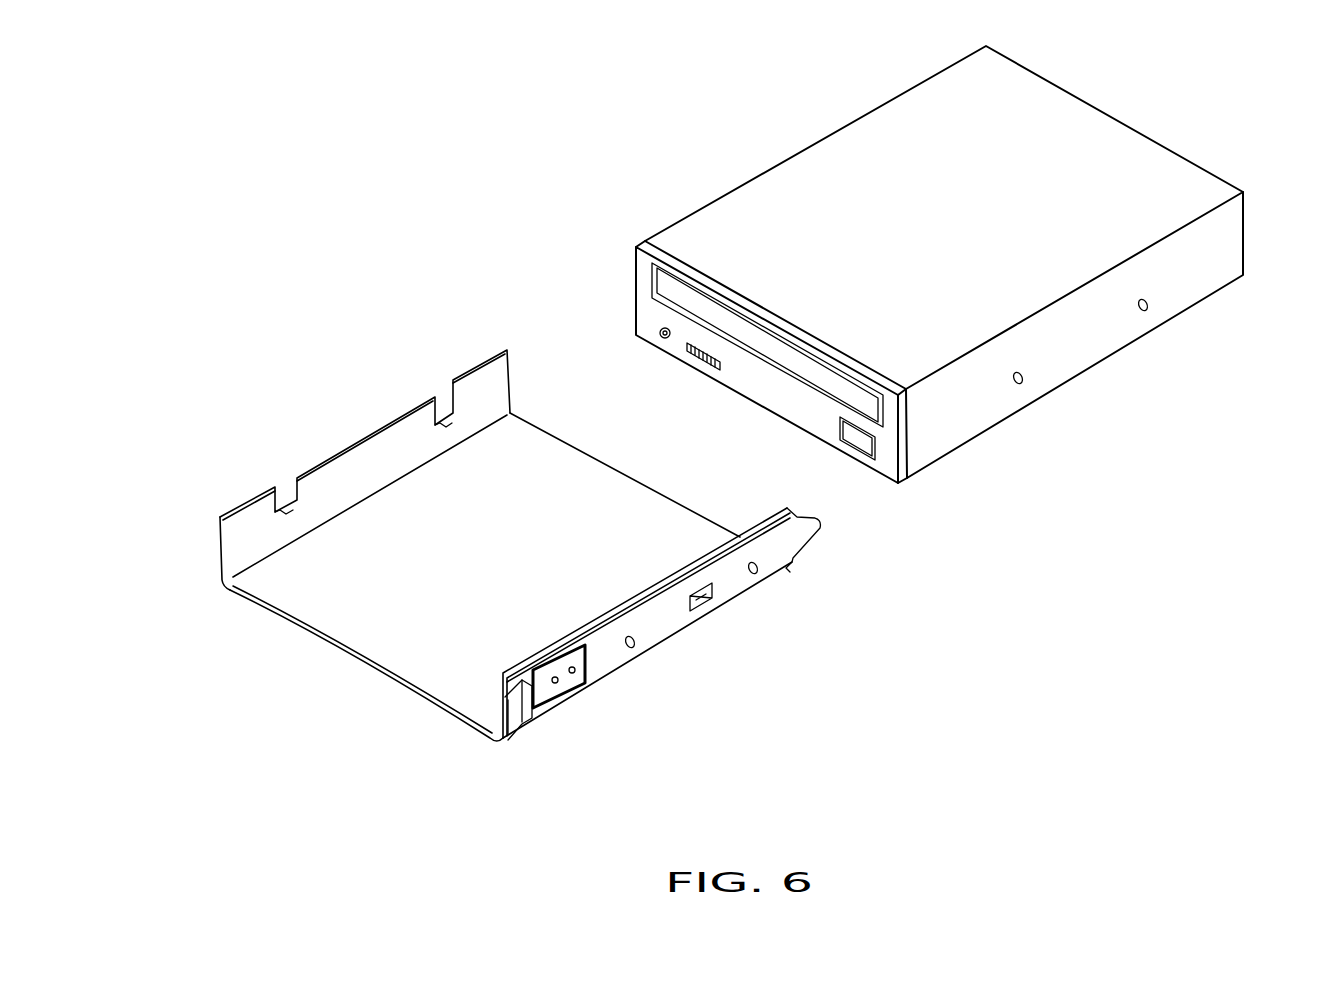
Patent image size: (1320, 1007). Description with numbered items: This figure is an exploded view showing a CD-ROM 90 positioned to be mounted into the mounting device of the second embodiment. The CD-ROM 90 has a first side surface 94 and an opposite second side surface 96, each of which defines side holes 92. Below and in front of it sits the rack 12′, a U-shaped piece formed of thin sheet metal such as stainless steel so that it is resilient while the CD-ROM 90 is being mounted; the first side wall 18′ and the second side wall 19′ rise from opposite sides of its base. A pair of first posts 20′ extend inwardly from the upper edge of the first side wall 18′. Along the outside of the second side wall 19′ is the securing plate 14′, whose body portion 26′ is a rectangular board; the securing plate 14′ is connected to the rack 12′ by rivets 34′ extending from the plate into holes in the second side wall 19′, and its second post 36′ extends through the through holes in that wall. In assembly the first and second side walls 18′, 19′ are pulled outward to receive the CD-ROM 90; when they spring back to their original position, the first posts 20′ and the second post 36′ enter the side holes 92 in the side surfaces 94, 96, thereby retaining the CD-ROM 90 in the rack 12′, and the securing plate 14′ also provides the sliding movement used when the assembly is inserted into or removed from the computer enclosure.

The rack 12′ is at (543, 538).
The securing plate 14′ is at (815, 546).
The first side wall 18′ is at (349, 462).
The second side wall 19′ is at (510, 670).
The first posts 20′ is at (437, 400).
The body portion 26′ is at (672, 624).
The rivets 34′ is at (635, 647).
The second post 36′ is at (705, 598).
The CD-ROM 90 is at (1080, 170).
The side holes 92 is at (1020, 384).
The first side surface 94 is at (817, 140).
The second side surface 96 is at (1190, 265).